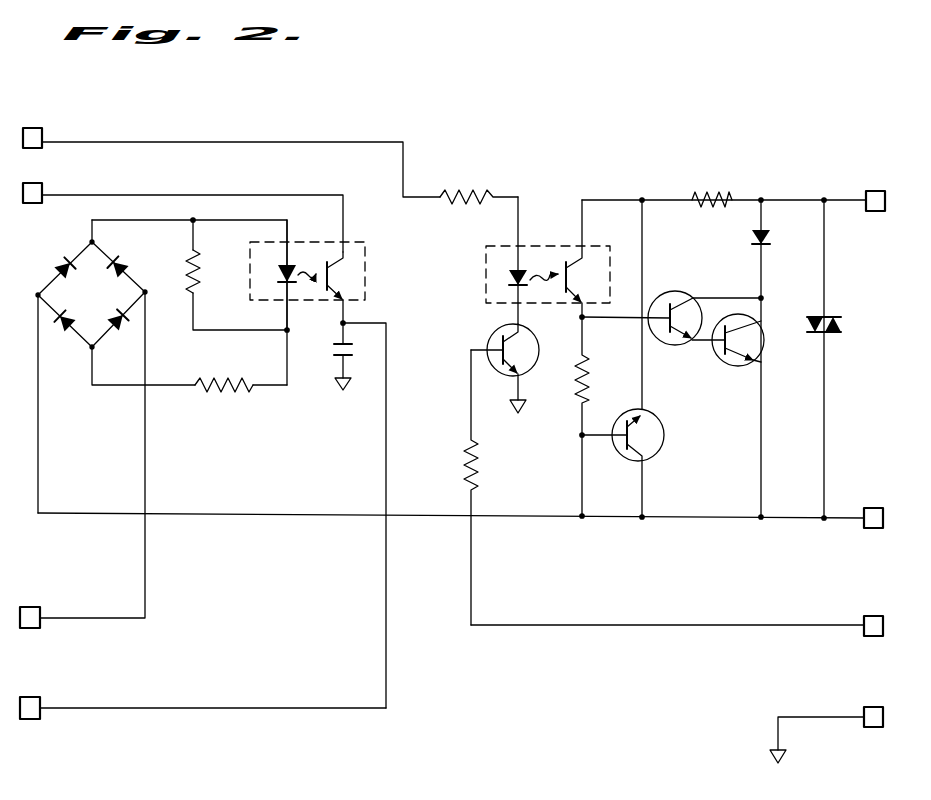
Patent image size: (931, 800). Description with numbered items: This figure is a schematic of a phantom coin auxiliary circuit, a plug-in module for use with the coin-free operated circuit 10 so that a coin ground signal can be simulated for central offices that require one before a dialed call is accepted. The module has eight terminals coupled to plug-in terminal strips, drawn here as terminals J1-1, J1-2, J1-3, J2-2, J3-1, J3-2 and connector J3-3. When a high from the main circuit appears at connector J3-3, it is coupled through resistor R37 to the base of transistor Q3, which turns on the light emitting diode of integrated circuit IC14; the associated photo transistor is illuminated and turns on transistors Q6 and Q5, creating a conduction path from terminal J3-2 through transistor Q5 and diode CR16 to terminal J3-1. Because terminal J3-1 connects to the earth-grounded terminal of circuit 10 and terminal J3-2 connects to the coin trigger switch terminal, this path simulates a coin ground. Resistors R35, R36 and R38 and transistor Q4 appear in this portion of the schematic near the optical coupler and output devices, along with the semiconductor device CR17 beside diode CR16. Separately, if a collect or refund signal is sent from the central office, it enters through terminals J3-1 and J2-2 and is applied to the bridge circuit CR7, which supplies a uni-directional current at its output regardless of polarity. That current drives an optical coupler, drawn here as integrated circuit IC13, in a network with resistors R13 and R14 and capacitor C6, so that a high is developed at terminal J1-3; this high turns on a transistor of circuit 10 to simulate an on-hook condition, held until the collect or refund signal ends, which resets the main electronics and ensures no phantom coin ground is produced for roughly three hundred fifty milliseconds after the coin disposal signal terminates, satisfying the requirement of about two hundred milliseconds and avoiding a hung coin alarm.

The coin-free operated circuit 10 is at (576, 99).
The terminal J1-2 is at (42, 131).
The terminal J2-2 is at (42, 186).
The bridge circuit CR7 is at (102, 304).
The resistor R13 is at (194, 295).
The resistor R14 is at (208, 395).
The integrated circuit IC13 is at (365, 262).
The capacitor C6 is at (340, 354).
The terminal J1-3 is at (26, 697).
The resistor R35 is at (452, 193).
The integrated circuit IC14 is at (486, 262).
The transistor Q3 is at (498, 378).
The resistor R37 is at (467, 450).
The resistor R38 is at (585, 360).
The transistor Q4 is at (660, 455).
The transistor Q6 is at (668, 292).
The transistor Q5 is at (745, 365).
The resistor R36 is at (710, 194).
The diode CR16 is at (766, 248).
The diode CR17 is at (832, 314).
The terminal J3-1 is at (895, 175).
The terminal J3-2 is at (866, 508).
The connector J3-3 is at (866, 616).
The terminal J1-1 is at (866, 707).